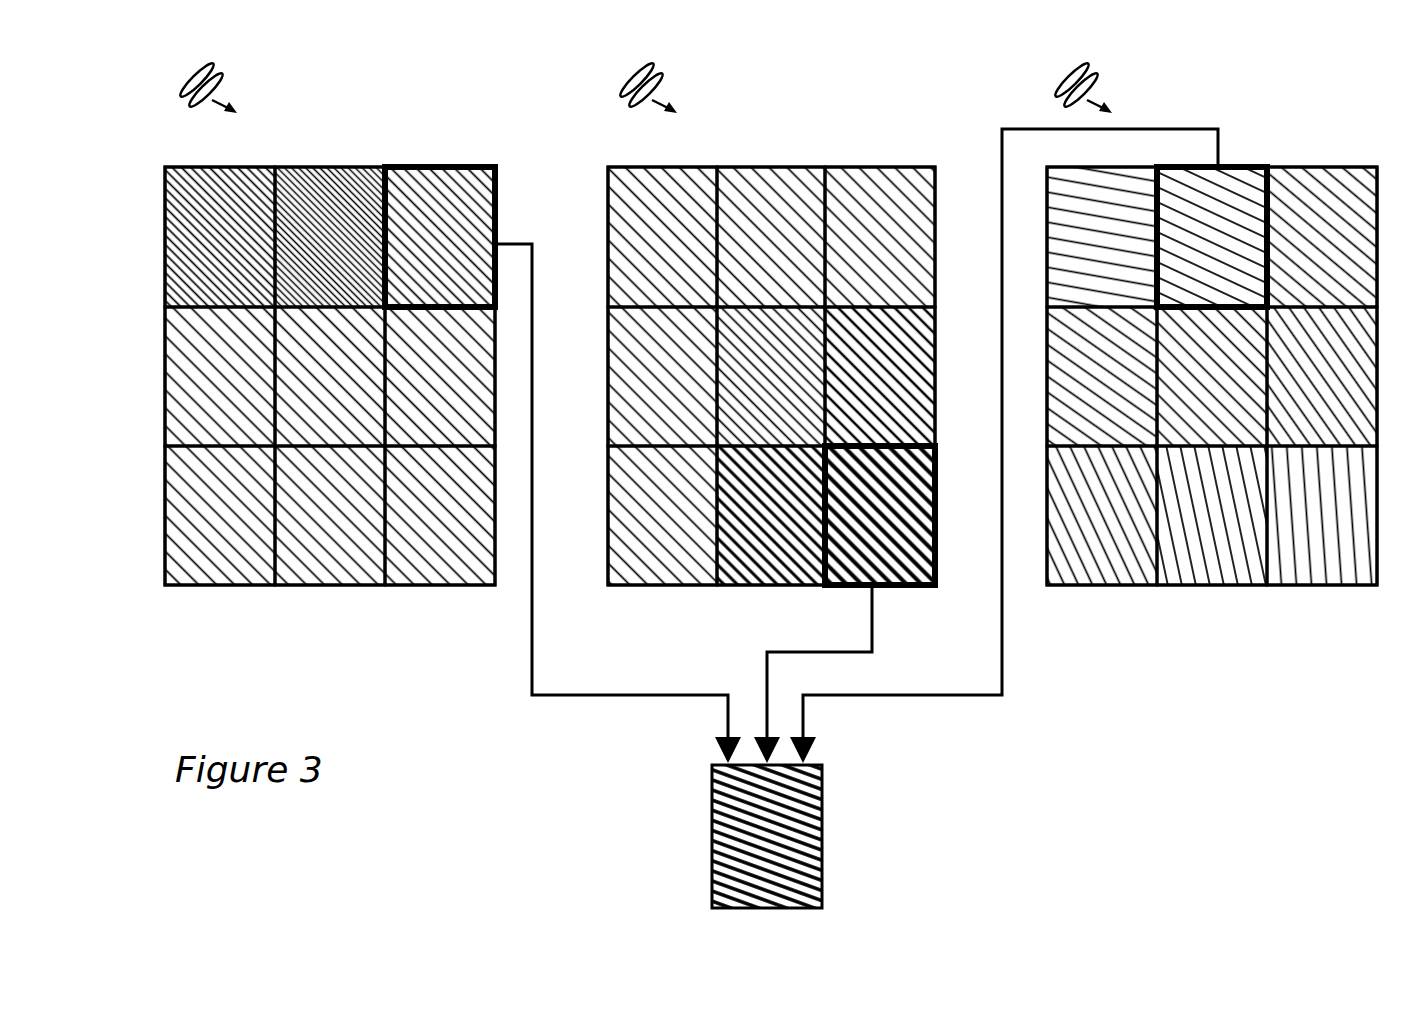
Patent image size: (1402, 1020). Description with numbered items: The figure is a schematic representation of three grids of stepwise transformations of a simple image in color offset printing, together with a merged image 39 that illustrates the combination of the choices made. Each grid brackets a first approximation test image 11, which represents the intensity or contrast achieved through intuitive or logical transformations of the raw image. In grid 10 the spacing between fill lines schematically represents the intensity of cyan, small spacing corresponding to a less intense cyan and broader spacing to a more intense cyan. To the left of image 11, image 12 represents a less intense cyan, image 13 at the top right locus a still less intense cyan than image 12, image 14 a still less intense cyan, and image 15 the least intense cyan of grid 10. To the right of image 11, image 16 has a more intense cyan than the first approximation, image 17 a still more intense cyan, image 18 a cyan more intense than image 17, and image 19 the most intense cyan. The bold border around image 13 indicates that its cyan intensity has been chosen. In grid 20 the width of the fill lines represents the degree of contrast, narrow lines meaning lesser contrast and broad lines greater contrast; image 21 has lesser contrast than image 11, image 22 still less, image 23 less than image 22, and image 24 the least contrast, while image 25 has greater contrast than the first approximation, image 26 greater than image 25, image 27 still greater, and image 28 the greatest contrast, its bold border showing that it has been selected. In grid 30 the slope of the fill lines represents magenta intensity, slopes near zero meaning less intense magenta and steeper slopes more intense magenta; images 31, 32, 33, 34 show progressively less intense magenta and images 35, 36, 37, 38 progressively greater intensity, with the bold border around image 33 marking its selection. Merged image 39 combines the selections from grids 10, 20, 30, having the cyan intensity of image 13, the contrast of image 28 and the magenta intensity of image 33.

The grid 10 is at (187, 74).
The grid 20 is at (627, 74).
The grid 30 is at (1062, 74).
The first approximation test image 11 is at (332, 429).
The image 12 is at (224, 429).
The image 13 is at (442, 289).
The image 14 is at (332, 289).
The image 15 is at (224, 289).
The image 16 is at (442, 429).
The image 17 is at (224, 567).
The image 18 is at (332, 567).
The image 19 is at (442, 567).
The image 21 is at (669, 429).
The image 22 is at (885, 289).
The image 23 is at (777, 289).
The image 24 is at (669, 289).
The image 25 is at (885, 429).
The image 26 is at (669, 567).
The image 27 is at (777, 567).
The image 28 is at (885, 567).
The image 31 is at (1099, 429).
The image 32 is at (1319, 289).
The image 33 is at (1209, 289).
The image 34 is at (1099, 289).
The image 35 is at (1319, 429).
The image 36 is at (1099, 567).
The image 37 is at (1209, 567).
The image 38 is at (1319, 567).
The merged image 39 is at (768, 880).